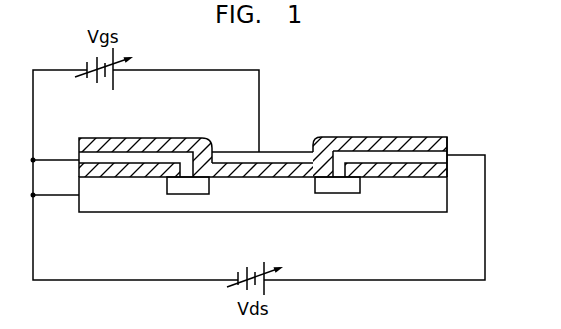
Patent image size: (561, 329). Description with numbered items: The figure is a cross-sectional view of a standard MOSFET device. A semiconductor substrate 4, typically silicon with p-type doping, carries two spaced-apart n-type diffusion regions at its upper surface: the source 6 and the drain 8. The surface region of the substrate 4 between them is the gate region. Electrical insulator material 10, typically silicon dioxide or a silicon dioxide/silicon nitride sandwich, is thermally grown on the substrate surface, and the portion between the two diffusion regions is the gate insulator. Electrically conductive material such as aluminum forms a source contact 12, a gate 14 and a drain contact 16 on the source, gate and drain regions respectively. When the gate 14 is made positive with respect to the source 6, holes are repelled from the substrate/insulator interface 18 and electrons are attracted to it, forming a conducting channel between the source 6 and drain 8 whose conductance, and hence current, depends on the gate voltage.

The semiconductor substrate 4 is at (108, 203).
The source diffusion region 6 is at (200, 191).
The drain diffusion region 8 is at (349, 189).
The electrical insulator material 10 is at (448, 166).
The source contact 12 is at (88, 157).
The gate 14 is at (282, 152).
The drain contact 16 is at (368, 156).
The substrate/insulator interface 18 is at (268, 172).